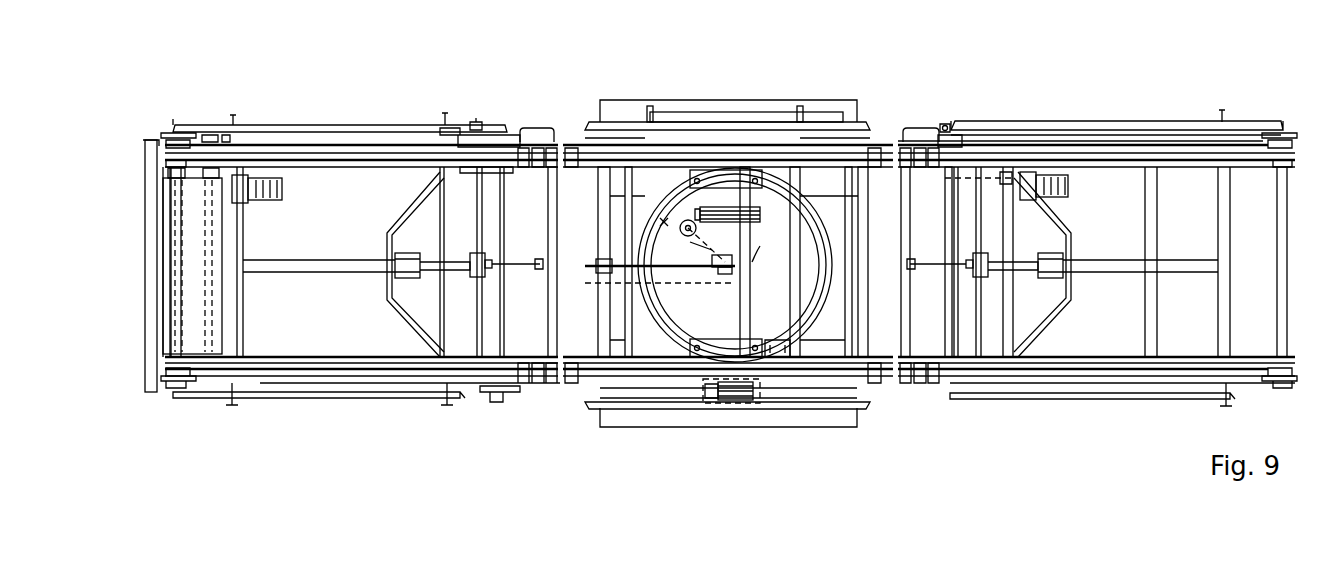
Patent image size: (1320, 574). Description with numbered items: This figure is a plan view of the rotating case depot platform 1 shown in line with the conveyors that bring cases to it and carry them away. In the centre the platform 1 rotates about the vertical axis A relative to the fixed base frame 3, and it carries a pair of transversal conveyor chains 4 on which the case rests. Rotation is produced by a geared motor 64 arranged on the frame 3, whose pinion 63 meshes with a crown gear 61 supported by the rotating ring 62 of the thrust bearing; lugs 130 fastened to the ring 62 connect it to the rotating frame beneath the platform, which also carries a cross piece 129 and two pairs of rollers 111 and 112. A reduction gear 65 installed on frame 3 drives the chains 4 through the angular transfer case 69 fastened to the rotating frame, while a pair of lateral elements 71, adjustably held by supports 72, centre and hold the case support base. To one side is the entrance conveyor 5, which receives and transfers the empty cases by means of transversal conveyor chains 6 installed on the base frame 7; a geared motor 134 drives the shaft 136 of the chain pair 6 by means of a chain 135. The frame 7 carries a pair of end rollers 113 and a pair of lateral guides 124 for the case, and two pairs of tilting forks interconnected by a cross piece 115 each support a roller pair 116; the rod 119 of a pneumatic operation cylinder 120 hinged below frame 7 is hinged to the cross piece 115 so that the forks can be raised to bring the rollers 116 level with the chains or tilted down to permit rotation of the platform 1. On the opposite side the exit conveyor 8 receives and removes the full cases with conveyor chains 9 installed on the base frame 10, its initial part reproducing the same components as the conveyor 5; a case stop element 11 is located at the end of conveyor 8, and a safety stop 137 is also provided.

The depot platform 1 is at (597, 98).
The base frame 3 is at (617, 103).
The transversal conveyor chains 4 is at (565, 130).
The entrance conveyor 5 is at (1143, 117).
The transversal conveyor chains 6 is at (1023, 157).
The base frame 7 is at (1108, 145).
The exit conveyor 8 is at (335, 118).
The conveyor chains 9 is at (256, 152).
The base frame 10 is at (293, 150).
The case stop element 11 is at (205, 298).
The crown gear 61 is at (822, 296).
The rotating ring 62 is at (818, 285).
The pinion 63 is at (770, 352).
The geared motor 64 is at (748, 408).
The reduction gear 65 is at (752, 213).
The angular transfer case 69 is at (722, 268).
The lateral elements 71 is at (673, 118).
The supports 72 is at (762, 124).
The rollers 111 is at (872, 170).
The rollers 112 is at (592, 170).
The end rollers 113 is at (478, 140).
The cross piece 115 is at (552, 330).
The roller pair 116 is at (521, 140).
The rod 119 is at (522, 262).
The pneumatic operation cylinder 120 is at (422, 270).
The lateral guides 124 is at (381, 125).
The cross piece 129 is at (628, 312).
The lugs 130 is at (720, 172).
The geared motor 134 is at (1062, 180).
The chain 135 is at (970, 182).
The shaft 136 is at (944, 240).
The safety stop 137 is at (141, 142).